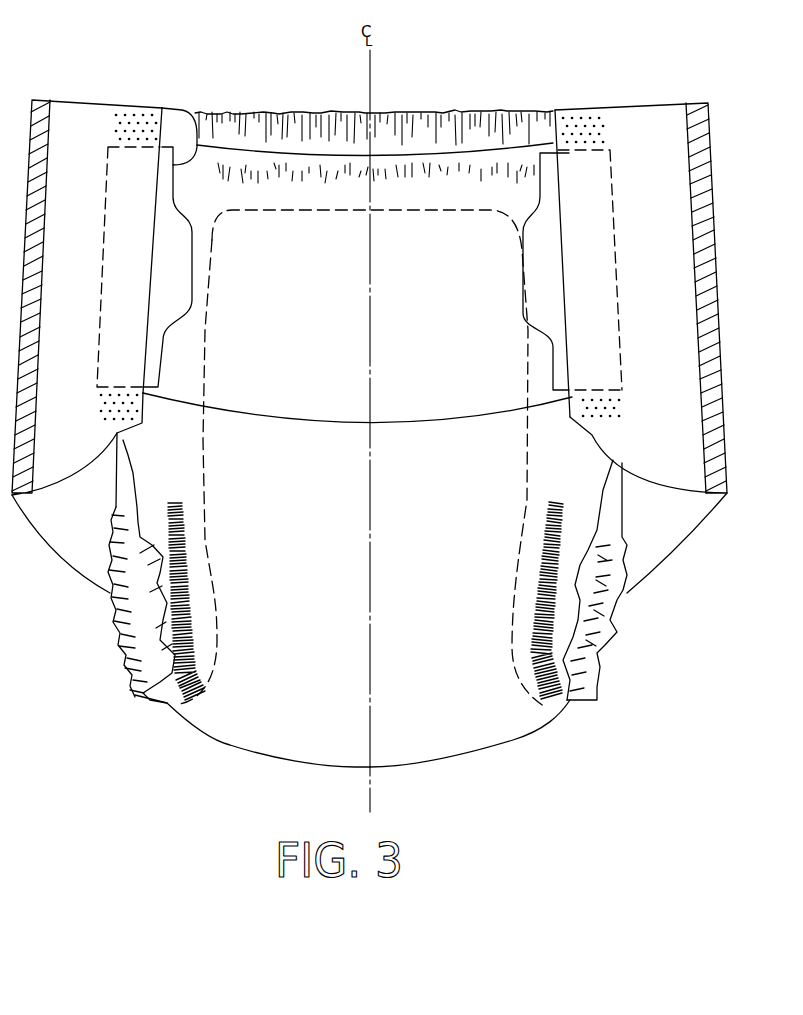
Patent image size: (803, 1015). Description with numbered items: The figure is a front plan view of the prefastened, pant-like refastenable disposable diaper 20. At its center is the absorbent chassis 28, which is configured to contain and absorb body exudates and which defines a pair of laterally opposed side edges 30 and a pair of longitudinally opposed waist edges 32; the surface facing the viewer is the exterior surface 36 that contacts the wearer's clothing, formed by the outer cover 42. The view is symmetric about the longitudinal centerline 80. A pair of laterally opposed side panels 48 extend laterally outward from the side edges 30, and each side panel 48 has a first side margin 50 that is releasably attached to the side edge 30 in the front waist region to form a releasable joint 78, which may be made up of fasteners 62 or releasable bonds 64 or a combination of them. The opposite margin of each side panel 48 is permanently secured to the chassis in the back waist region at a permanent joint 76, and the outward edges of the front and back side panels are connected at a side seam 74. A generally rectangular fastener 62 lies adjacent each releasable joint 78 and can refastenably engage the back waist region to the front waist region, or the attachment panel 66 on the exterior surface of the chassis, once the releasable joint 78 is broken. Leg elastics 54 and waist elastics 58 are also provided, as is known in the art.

The pant-like refastenable disposable diaper 20 is at (100, 38).
The absorbent chassis 28 is at (235, 722).
The side edges 30 is at (623, 502).
The waist edges 32 is at (364, 114).
The exterior surface 36 is at (423, 740).
The outer cover 42 is at (332, 558).
The side panels 48 is at (77, 100).
The first side margin 50 is at (173, 108).
The leg elastics 54 is at (536, 660).
The waist elastics 58 is at (473, 117).
The fastener 62 is at (196, 116).
The releasable bonds 64 is at (585, 118).
The attachment panel 66 is at (413, 423).
The side seam 74 is at (695, 177).
The permanent joint 76 is at (115, 503).
The releasable joint 78 is at (137, 106).
The longitudinal centerline 80 is at (371, 93).